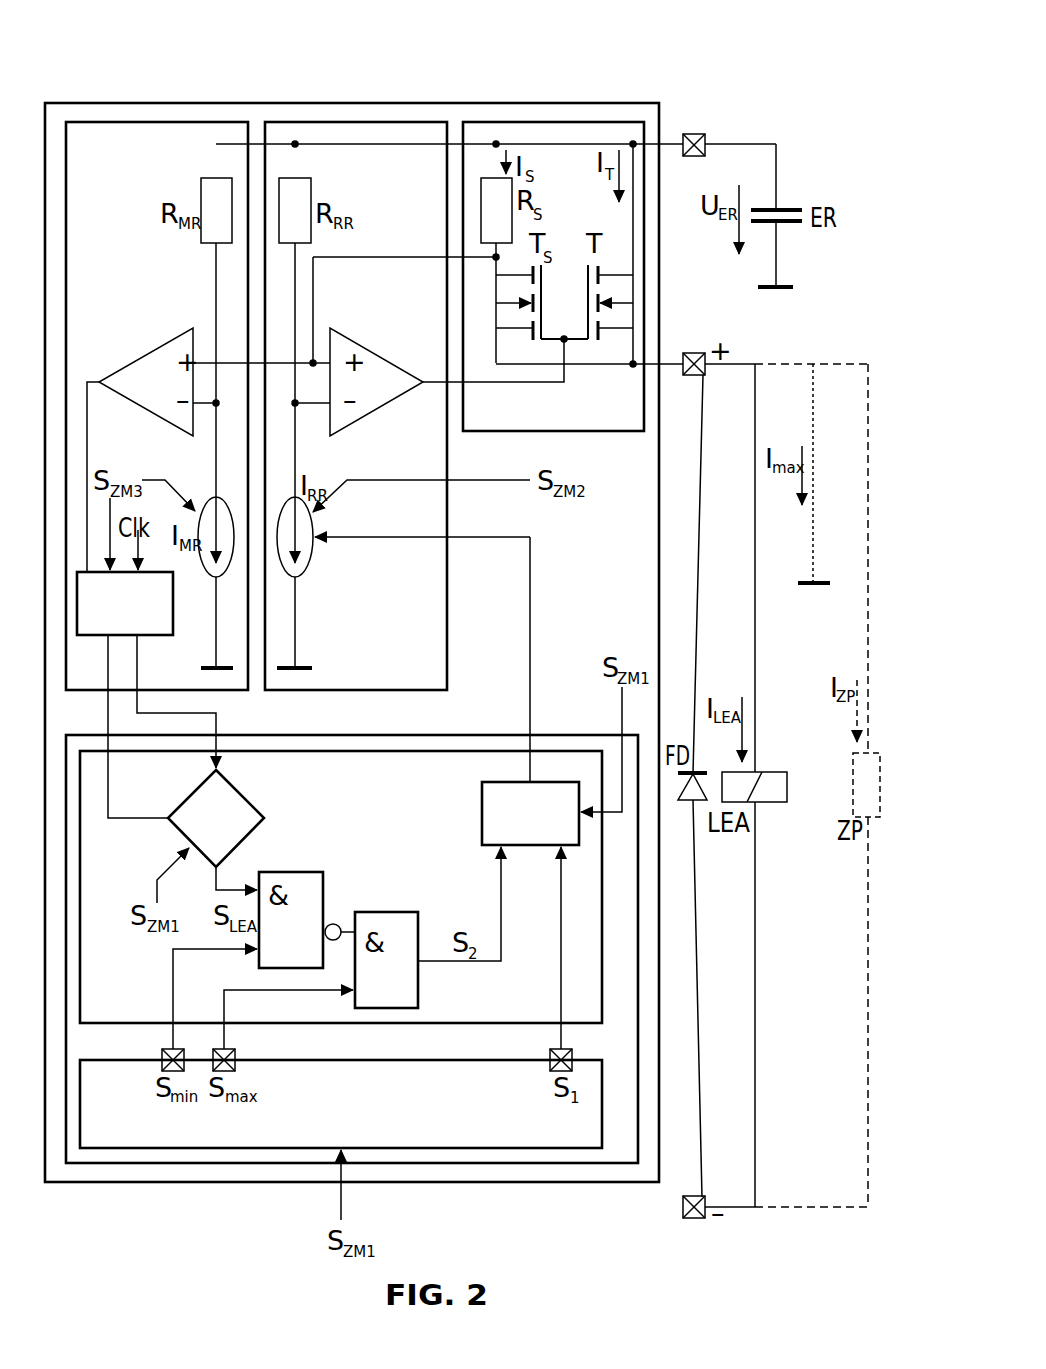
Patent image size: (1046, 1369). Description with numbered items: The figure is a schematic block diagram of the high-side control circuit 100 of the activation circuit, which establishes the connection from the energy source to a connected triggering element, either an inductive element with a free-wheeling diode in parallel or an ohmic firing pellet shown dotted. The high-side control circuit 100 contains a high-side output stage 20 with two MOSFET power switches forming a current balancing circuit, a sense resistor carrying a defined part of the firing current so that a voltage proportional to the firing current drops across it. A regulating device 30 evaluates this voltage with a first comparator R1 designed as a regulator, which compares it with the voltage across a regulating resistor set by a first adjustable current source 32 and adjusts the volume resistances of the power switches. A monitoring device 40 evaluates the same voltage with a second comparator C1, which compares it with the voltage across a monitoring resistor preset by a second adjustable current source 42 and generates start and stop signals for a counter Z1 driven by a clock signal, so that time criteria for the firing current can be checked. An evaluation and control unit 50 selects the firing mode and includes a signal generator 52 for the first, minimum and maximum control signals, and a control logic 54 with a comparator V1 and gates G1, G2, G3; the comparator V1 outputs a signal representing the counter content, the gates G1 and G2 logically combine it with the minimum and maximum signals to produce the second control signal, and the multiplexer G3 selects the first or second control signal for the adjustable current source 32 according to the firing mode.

The high-side control circuit 100 is at (622, 103).
The high-side output stage 20 is at (550, 122).
The regulating device 30 is at (337, 122).
The monitoring device 40 is at (117, 122).
The first adjustable current source 32 is at (312, 557).
The second adjustable current source 42 is at (199, 562).
The evaluation and control unit 50 is at (577, 1163).
The signal generator 52 is at (482, 1148).
The control logic 54 is at (482, 751).
The second comparator C1 is at (112, 374).
The first comparator R1 is at (403, 370).
The counter Z1 is at (143, 638).
The comparator V1 is at (235, 782).
The gate G1 is at (307, 872).
The gate G2 is at (402, 912).
The multiplexer G3 is at (482, 815).